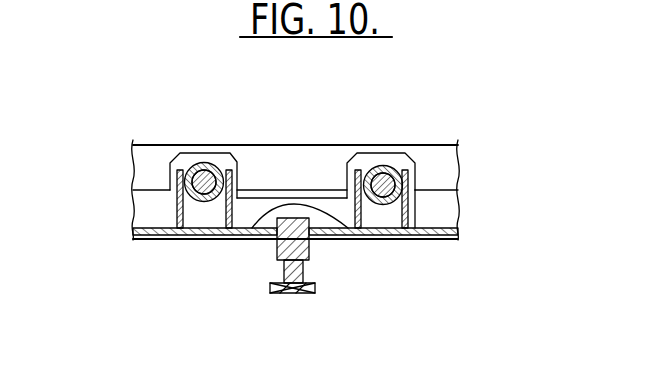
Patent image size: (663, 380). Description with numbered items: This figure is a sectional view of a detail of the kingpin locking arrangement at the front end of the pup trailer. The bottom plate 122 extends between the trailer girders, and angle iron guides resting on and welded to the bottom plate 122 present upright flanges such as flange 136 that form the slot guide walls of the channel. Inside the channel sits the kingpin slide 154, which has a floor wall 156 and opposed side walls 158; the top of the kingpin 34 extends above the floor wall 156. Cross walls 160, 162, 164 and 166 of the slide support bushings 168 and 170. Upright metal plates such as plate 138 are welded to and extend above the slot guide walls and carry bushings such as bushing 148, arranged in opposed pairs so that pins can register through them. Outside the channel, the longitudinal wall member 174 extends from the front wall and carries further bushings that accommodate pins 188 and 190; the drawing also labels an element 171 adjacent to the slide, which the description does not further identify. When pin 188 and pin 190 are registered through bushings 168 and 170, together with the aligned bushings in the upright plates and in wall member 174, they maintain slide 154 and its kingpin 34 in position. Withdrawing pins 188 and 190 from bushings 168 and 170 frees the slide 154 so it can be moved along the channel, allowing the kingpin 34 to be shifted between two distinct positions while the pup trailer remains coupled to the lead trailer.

The kingpin 34 is at (312, 293).
The bottom plate 122 is at (166, 240).
The upright flange 136 is at (333, 190).
The metal plate 138 is at (418, 148).
The bushing 148 is at (180, 157).
The kingpin slide 154 is at (433, 199).
The floor wall 156 is at (313, 230).
The side walls 158 is at (203, 214).
The cross wall 160 is at (410, 182).
The cross wall 162 is at (366, 216).
The cross wall 164 is at (252, 228).
The cross wall 166 is at (177, 177).
The bushing 168 is at (378, 167).
The bushing 170 is at (210, 172).
The gap 171 is at (233, 205).
The longitudinal wall member 174 is at (305, 182).
The pin 188 is at (386, 167).
The pin 190 is at (211, 170).